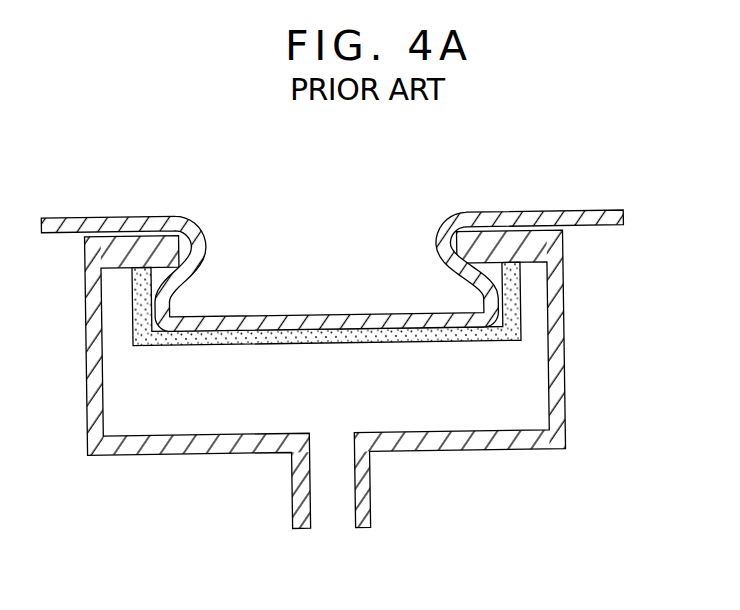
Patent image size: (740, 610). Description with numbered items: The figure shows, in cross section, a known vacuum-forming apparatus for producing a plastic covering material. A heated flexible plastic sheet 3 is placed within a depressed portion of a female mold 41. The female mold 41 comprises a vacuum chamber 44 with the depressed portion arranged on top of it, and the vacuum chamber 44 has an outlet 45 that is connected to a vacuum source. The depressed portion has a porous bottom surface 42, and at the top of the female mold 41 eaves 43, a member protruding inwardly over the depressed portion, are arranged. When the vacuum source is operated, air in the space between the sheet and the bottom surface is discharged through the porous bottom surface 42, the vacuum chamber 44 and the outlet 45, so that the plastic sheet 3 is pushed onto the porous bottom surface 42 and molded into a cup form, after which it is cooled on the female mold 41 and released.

The flexible plastic sheet 3 is at (585, 214).
The female mold 41 is at (566, 376).
The porous bottom surface 42 is at (517, 331).
The eaves 43 is at (495, 244).
The vacuum chamber 44 is at (501, 420).
The outlet 45 is at (340, 518).